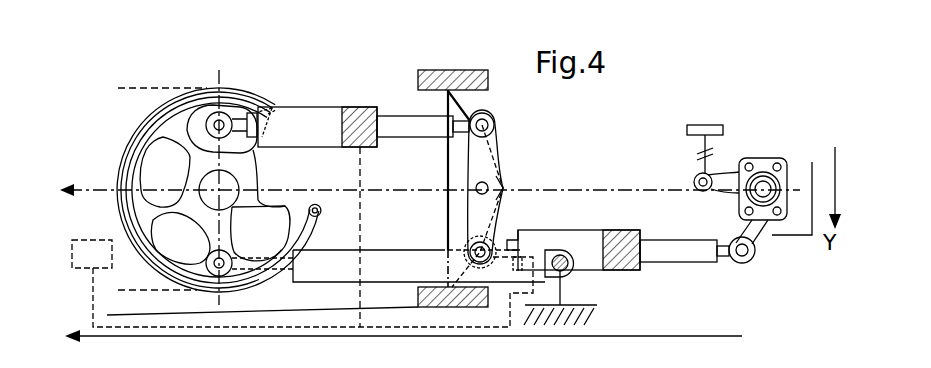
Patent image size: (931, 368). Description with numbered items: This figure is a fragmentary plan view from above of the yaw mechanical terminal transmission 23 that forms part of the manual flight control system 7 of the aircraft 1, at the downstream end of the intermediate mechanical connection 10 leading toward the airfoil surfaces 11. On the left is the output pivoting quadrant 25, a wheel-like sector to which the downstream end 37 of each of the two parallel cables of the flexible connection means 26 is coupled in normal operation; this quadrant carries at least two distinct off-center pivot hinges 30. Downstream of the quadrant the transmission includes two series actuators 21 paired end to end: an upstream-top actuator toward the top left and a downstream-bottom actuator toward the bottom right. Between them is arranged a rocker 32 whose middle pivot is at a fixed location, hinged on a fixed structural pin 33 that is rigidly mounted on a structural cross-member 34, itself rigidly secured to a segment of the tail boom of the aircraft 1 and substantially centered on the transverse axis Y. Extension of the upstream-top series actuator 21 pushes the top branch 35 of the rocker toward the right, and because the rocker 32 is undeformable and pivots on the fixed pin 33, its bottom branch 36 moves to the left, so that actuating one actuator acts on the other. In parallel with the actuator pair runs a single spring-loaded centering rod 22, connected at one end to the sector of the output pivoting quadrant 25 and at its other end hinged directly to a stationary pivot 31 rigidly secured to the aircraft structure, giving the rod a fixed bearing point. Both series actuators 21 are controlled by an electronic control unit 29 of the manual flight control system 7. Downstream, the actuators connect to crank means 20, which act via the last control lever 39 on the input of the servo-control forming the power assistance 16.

The aircraft 1 is at (388, 298).
The manual flight control system 7 is at (188, 165).
The intermediate mechanical connection 10 is at (112, 106).
The airfoil surfaces 11 is at (693, 124).
The power assistance 16 is at (793, 224).
The deflector means 20 is at (793, 154).
The series actuator 21 is at (325, 100).
The centering rod 22 is at (318, 288).
The mechanical terminal transmission 23 is at (700, 335).
The output pivoting quadrant 25 is at (166, 130).
The flexible connection means 26 is at (153, 87).
The electronic control unit 29 is at (106, 266).
The off-center pivot hinges 30 is at (225, 84).
The stationary pivot 31 is at (605, 318).
The rocker 32 is at (493, 146).
The fixed structural pin 33 is at (493, 168).
The structural cross-member 34 is at (453, 230).
The top branch 35 is at (478, 157).
The bottom branch 36 is at (492, 222).
The downstream end 37 is at (277, 106).
The control lever 39 is at (757, 232).